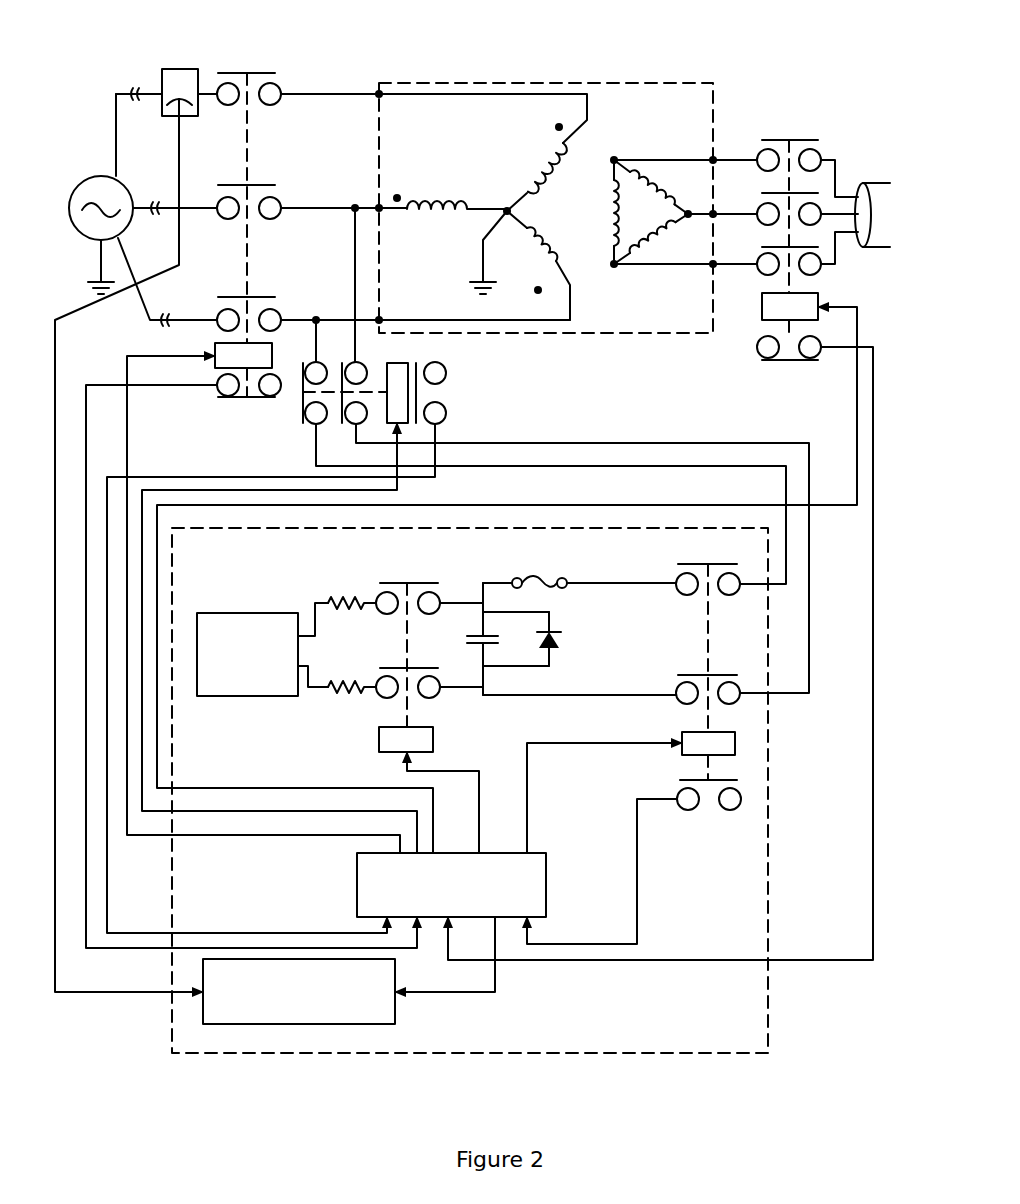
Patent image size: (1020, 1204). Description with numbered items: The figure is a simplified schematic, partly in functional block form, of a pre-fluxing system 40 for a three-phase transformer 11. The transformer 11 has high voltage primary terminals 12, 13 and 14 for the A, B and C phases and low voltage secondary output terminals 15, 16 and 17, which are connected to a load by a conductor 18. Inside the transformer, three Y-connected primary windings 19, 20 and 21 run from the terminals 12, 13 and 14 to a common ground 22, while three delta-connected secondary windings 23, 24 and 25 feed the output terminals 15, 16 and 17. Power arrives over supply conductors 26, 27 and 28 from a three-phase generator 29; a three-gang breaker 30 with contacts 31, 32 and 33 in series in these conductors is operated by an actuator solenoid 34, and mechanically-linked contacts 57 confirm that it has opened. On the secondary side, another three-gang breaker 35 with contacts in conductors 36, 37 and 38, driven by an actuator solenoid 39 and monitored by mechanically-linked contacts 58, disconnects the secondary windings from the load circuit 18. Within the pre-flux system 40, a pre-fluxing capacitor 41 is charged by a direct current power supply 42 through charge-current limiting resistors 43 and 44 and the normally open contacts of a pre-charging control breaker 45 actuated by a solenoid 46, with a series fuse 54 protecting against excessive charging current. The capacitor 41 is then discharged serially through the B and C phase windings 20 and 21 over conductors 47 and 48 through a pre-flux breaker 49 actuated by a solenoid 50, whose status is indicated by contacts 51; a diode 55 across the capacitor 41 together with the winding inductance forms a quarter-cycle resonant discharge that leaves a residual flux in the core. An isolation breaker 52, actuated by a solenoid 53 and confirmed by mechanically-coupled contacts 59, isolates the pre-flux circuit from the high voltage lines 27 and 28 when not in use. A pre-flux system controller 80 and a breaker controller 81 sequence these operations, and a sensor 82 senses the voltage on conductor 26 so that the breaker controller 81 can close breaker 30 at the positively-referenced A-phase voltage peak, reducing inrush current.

The three-phase transformer 11 is at (557, 83).
The primary terminal 12 is at (379, 92).
The primary terminal 13 is at (378, 208).
The primary terminal 14 is at (383, 318).
The secondary output terminal 15 is at (712, 160).
The secondary output terminal 16 is at (714, 212).
The secondary output terminal 17 is at (713, 266).
The conductor 18 is at (880, 183).
The primary winding 19 is at (540, 155).
The primary winding 20 is at (440, 218).
The primary winding 21 is at (536, 270).
The common ground 22 is at (507, 210).
The secondary winding 23 is at (655, 178).
The secondary winding 24 is at (607, 215).
The secondary winding 25 is at (648, 265).
The conductor 26 is at (318, 94).
The conductor 27 is at (318, 208).
The conductor 28 is at (303, 318).
The three-phase generator 29 is at (98, 178).
The three-gang breaker 30 is at (252, 73).
The contact 31 is at (273, 106).
The contact 32 is at (272, 219).
The contact 33 is at (272, 331).
The actuator solenoid 34 is at (220, 345).
The three-gang breaker 35 is at (790, 140).
The conductor 36 is at (758, 153).
The conductor 37 is at (760, 222).
The conductor 38 is at (760, 272).
The actuator solenoid 39 is at (762, 320).
The pre-flux system 40 is at (768, 760).
The pre-fluxing capacitor 41 is at (495, 644).
The direct current power supply 42 is at (252, 613).
The charge-current limiting resistor 43 is at (348, 600).
The charge-current limiting resistor 44 is at (343, 690).
The pre-charging control breaker 45 is at (400, 583).
The solenoid 46 is at (379, 745).
The conductor 47 is at (604, 443).
The conductor 48 is at (658, 466).
The pre-flux breaker 49 is at (698, 564).
The solenoid 50 is at (680, 735).
The contacts 51 is at (680, 780).
The isolation breaker 52 is at (303, 410).
The solenoid 53 is at (399, 372).
The fuse 54 is at (540, 580).
The diode 55 is at (558, 642).
The mechanically-linked contacts 57 is at (235, 398).
The mechanically-linked contacts 58 is at (789, 360).
The mechanically-coupled contacts 59 is at (446, 413).
The pre-flux system controller 80 is at (357, 878).
The breaker controller 81 is at (395, 1015).
The sensor 82 is at (176, 69).